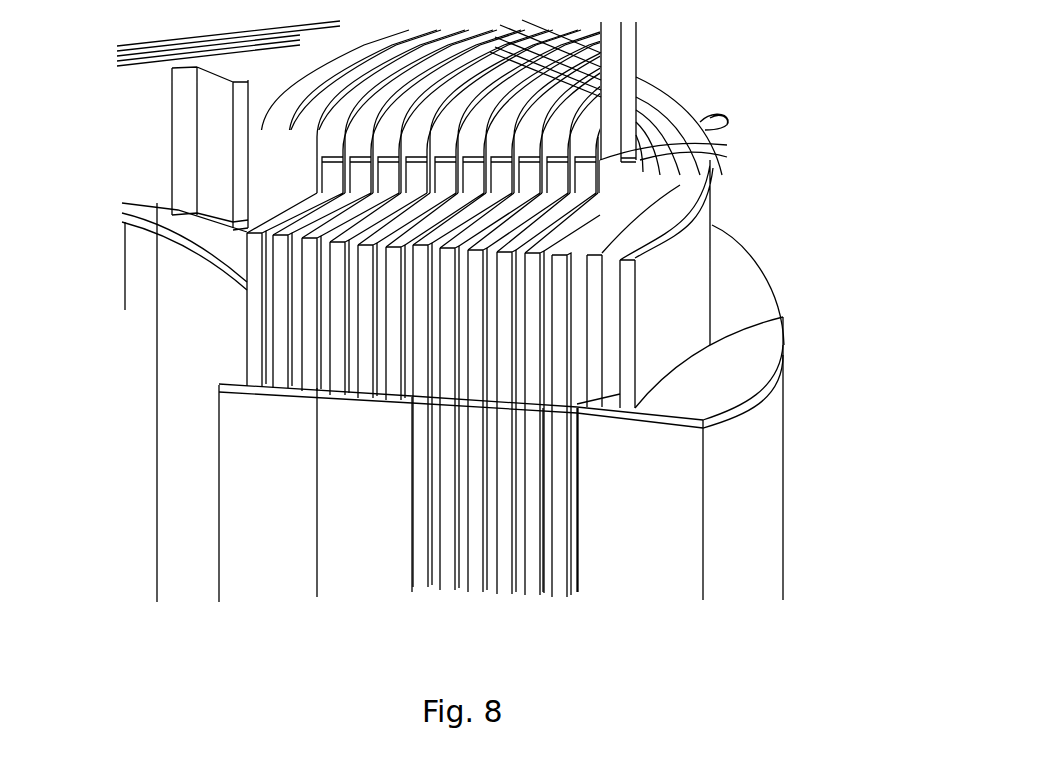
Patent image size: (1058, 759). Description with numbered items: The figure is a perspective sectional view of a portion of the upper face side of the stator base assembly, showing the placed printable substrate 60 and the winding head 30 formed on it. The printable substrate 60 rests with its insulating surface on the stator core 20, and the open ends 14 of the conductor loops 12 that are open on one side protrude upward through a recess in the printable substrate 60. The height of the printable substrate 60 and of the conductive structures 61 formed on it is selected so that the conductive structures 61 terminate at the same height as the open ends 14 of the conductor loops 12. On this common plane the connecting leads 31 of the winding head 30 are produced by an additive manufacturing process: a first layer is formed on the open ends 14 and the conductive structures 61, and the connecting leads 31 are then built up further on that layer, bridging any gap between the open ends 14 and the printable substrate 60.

The conductor loops that are open on one side 12 is at (412, 578).
The open ends of the conductor loops 14 is at (554, 405).
The stator core 20 is at (247, 520).
The winding head 30 is at (688, 72).
The connecting leads 31 is at (715, 125).
The printable substrate 60 is at (219, 385).
The conductive structures 61 is at (700, 348).